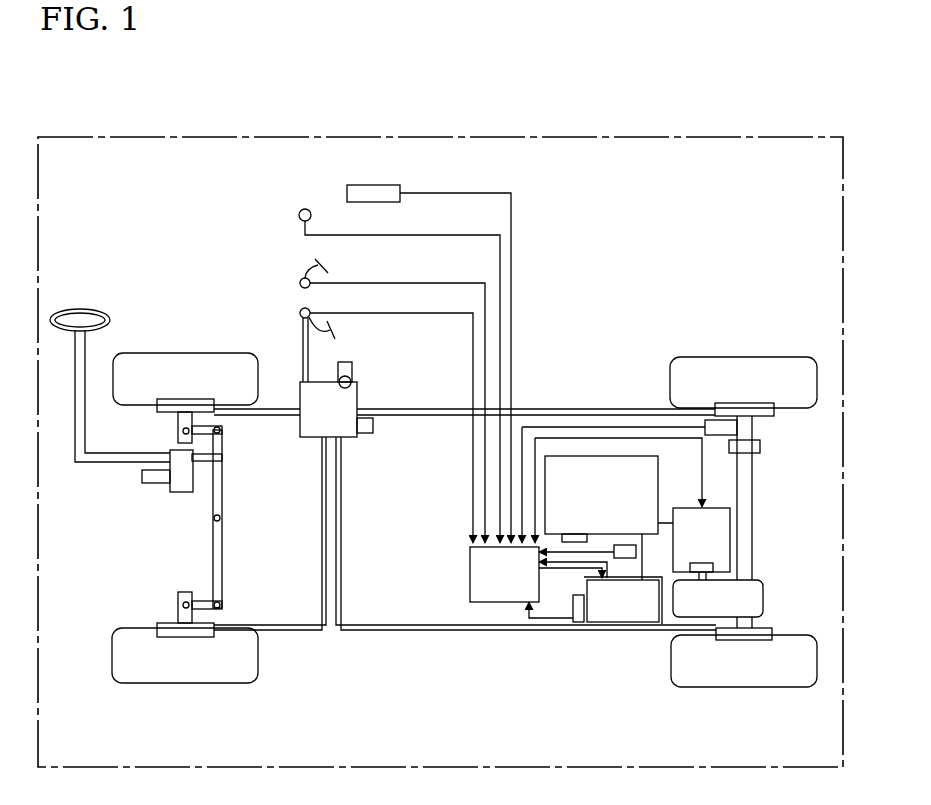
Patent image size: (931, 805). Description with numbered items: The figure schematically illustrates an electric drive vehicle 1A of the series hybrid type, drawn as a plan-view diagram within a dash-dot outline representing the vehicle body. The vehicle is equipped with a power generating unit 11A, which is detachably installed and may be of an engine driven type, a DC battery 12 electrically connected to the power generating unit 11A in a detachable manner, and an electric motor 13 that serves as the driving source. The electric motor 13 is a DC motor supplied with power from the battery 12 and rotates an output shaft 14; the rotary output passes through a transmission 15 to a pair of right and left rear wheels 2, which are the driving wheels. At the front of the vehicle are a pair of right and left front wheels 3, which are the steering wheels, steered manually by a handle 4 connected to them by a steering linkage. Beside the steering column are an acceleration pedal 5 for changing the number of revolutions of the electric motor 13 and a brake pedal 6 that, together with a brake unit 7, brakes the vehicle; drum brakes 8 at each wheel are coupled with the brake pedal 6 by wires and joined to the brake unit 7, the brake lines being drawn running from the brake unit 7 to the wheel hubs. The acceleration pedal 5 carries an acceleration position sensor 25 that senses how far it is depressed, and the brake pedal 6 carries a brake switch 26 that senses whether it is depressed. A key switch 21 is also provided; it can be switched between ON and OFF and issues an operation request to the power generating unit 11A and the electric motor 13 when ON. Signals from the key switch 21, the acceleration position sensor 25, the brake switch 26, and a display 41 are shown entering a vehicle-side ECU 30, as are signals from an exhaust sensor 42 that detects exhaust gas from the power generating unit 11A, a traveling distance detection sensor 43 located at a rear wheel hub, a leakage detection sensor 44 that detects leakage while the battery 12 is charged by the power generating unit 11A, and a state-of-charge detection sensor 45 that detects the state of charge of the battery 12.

The electric drive vehicle 1A is at (120, 137).
The rear wheels 2 is at (748, 380).
The front wheels 3 is at (183, 370).
The handle 4 is at (80, 310).
The acceleration pedal 5 is at (326, 263).
The brake pedal 6 is at (336, 330).
The brake unit 7 is at (345, 398).
The drum brakes 8 is at (172, 413).
The power generating unit 11A is at (621, 600).
The battery 12 is at (616, 490).
The electric motor 13 is at (716, 521).
The output shaft 14 is at (706, 578).
The transmission 15 is at (745, 598).
The key switch 21 is at (305, 209).
The acceleration position sensor 25 is at (300, 283).
The brake switch 26 is at (300, 313).
The ECU 30 is at (513, 578).
The display 41 is at (400, 187).
The exhaust sensor 42 is at (577, 624).
The traveling distance detection sensor 43 is at (713, 403).
The leakage detection sensor 44 is at (622, 545).
The state-of-charge detection sensor 45 is at (582, 533).